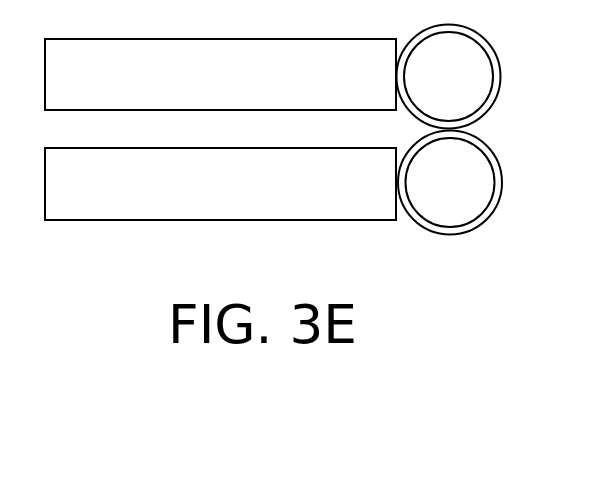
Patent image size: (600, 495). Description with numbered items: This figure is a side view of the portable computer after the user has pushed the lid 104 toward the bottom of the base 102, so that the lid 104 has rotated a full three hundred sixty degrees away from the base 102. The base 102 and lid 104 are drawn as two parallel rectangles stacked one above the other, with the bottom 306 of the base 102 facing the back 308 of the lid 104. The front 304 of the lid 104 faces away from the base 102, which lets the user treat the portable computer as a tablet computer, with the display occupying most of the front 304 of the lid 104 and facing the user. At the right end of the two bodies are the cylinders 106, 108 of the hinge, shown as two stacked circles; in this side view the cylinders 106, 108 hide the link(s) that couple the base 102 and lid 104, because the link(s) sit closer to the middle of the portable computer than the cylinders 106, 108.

The base 102 is at (236, 88).
The lid 104 is at (236, 198).
The cylinder 106 is at (468, 86).
The cylinder 108 is at (472, 188).
The front of the lid 304 is at (167, 228).
The bottom of the base 306 is at (171, 117).
The back of the lid 308 is at (271, 141).